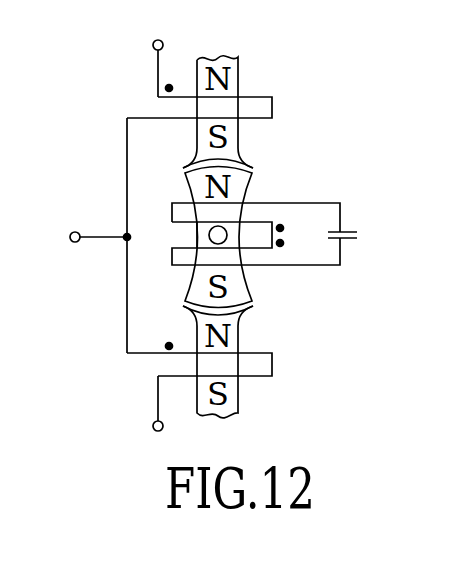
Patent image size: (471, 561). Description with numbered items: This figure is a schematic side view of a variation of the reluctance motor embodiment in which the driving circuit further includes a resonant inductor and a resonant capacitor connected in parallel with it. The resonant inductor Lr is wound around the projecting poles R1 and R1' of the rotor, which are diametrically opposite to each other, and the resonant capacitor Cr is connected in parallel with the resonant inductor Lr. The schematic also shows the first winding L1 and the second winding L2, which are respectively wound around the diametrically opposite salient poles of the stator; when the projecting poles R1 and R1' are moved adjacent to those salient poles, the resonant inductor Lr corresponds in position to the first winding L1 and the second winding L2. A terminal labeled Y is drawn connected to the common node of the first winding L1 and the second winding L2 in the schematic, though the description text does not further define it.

The projecting pole R1 is at (141, 63).
The projecting pole R1' is at (137, 410).
The common terminal Y is at (86, 236).
The first winding L1 is at (220, 111).
The second winding L2 is at (220, 364).
The resonant inductor Lr is at (243, 234).
The resonant capacitor Cr is at (361, 237).